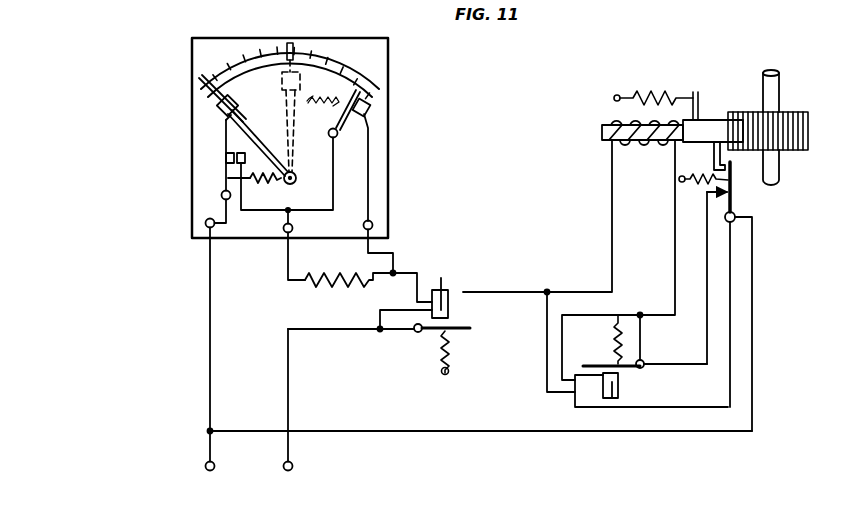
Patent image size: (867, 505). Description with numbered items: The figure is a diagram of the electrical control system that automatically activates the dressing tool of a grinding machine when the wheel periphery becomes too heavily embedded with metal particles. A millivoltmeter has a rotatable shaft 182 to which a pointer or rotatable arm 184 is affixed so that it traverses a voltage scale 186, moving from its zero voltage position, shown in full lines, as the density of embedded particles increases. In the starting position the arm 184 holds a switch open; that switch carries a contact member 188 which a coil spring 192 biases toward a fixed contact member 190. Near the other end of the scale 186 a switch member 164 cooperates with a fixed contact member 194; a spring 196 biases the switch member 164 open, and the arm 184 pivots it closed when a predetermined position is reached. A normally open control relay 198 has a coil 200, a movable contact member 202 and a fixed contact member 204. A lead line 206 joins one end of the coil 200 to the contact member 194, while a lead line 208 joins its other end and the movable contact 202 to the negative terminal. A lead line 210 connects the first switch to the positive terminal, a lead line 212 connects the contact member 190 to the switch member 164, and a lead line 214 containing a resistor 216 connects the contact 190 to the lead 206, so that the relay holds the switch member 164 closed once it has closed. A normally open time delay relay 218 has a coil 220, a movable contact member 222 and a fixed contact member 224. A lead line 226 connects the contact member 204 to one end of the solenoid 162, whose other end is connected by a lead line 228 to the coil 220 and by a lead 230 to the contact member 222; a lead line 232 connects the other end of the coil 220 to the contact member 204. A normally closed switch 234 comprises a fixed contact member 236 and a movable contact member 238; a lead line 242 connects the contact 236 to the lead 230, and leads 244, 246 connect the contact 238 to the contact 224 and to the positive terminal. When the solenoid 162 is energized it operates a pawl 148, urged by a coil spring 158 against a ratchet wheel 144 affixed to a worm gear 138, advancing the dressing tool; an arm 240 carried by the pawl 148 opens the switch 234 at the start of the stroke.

The worm gear 138 is at (776, 80).
The ratchet wheel 144 is at (803, 118).
The pawl 148 is at (708, 122).
The coil spring 158 is at (677, 94).
The solenoid 162 is at (604, 135).
The switch member 164 is at (373, 120).
The rotatable shaft 182 is at (296, 181).
The pointer or rotatable arm 184 is at (224, 130).
The voltage scale 186 is at (311, 58).
The contact member 188 is at (230, 162).
The fixed contact member 190 is at (222, 180).
The coil spring 192 is at (258, 210).
The fixed contact member 194 is at (368, 104).
The spring 196 is at (312, 106).
The control relay 198 is at (456, 288).
The relay coil 200 is at (442, 280).
The movable contact member 202 is at (455, 336).
The fixed contact member 204 is at (463, 296).
The lead line 206 is at (398, 256).
The lead line 208 is at (378, 314).
The lead line 210 is at (208, 356).
The lead line 212 is at (270, 215).
The lead line 214 is at (292, 264).
The resistor 216 is at (330, 285).
The time delay relay 218 is at (625, 387).
The relay coil 220 is at (617, 402).
The movable contact member 222 is at (624, 369).
The fixed contact member 224 is at (589, 372).
The lead line 226 is at (537, 292).
The lead line 228 is at (674, 198).
The lead 230 is at (644, 338).
The lead line 232 is at (546, 388).
The normally closed switch 234 is at (744, 196).
The fixed contact member 236 is at (720, 196).
The movable contact member 238 is at (738, 183).
The arm 240 is at (713, 158).
The lead line 242 is at (708, 293).
The lead 244 is at (731, 366).
The lead 246 is at (402, 433).